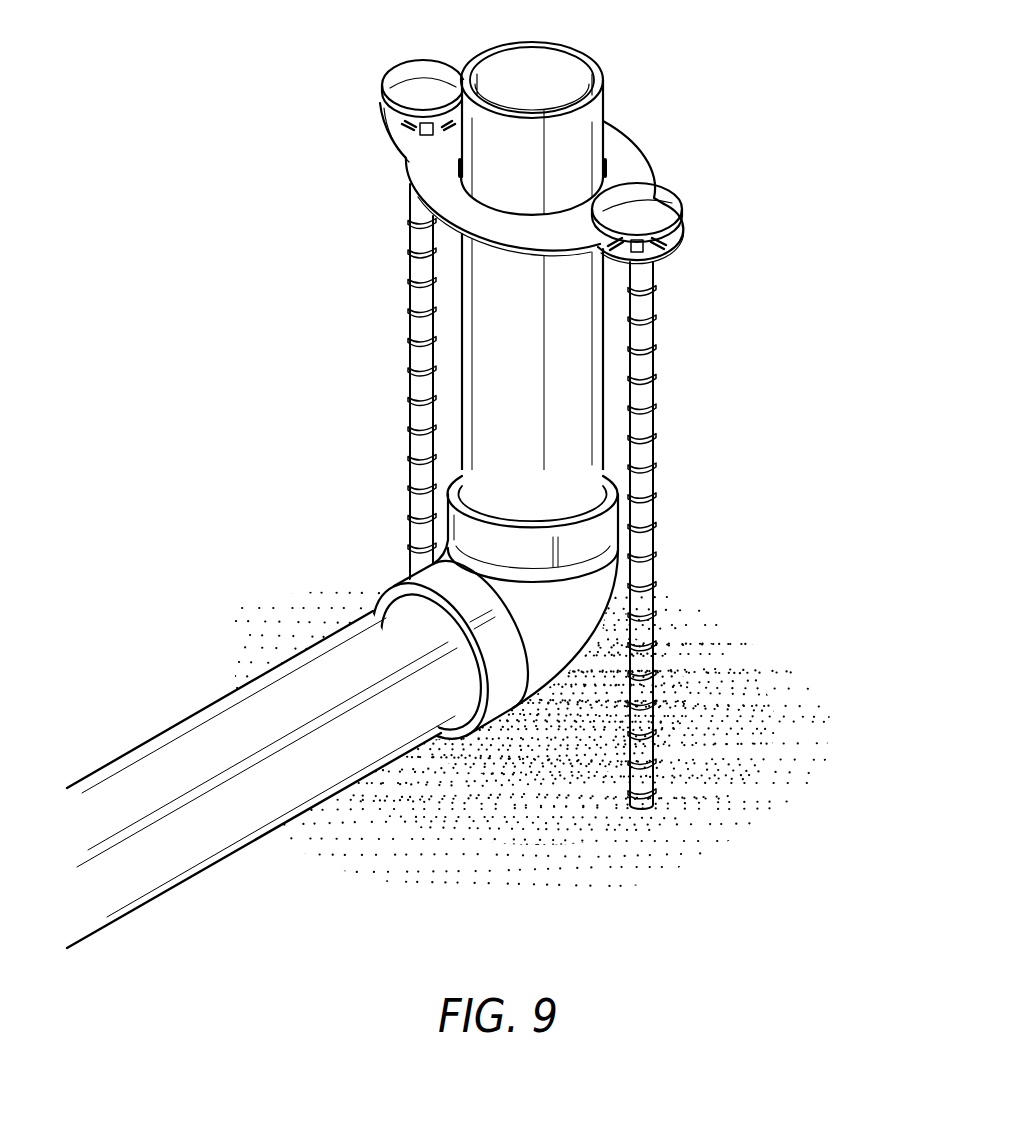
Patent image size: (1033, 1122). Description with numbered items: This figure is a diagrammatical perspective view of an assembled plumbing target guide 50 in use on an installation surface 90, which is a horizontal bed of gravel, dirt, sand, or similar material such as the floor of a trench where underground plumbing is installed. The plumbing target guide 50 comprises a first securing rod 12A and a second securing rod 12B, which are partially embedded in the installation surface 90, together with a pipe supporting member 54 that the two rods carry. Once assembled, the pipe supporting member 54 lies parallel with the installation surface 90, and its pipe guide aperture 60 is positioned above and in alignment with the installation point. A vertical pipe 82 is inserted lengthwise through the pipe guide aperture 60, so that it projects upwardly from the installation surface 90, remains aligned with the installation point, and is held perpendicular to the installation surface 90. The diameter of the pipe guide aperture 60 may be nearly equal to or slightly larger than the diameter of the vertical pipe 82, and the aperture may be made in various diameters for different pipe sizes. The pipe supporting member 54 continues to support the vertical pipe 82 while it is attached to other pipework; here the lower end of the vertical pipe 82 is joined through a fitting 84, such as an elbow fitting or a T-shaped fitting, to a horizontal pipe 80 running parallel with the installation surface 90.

The plumbing target guide 50 is at (517, 162).
The pipe supporting member 54 is at (406, 166).
The pipe guide aperture 60 is at (605, 173).
The vertical pipe 82 is at (583, 130).
The fitting 84 is at (565, 613).
The horizontal pipe 80 is at (198, 822).
The first securing rod 12A is at (422, 298).
The second securing rod 12B is at (645, 367).
The installation surface 90 is at (590, 831).